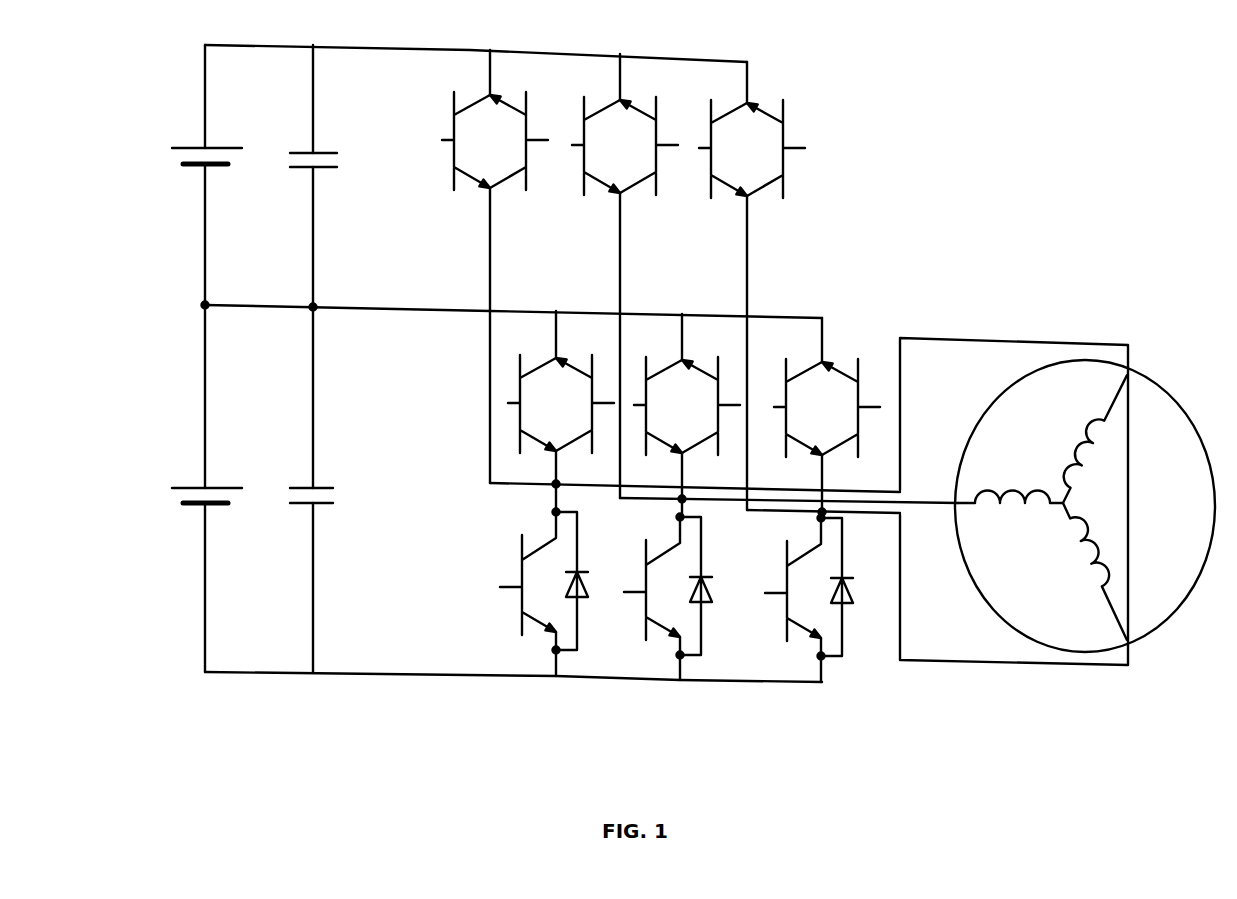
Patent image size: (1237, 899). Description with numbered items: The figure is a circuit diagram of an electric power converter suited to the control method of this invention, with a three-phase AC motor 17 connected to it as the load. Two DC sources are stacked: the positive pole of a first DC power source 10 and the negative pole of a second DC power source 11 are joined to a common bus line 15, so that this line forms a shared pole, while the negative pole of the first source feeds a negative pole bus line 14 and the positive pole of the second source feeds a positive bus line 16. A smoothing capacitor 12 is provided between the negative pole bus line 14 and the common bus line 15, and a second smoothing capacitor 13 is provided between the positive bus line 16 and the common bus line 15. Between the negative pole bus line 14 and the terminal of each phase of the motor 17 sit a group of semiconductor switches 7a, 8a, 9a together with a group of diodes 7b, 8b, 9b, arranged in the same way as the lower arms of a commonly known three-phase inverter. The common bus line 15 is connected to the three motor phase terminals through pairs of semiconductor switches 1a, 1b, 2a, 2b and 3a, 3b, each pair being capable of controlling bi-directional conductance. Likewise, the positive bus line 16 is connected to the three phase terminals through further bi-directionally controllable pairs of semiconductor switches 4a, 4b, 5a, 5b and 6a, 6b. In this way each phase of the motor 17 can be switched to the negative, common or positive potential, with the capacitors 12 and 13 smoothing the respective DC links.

The semiconductor switch 1a is at (520, 345).
The semiconductor switch 1b is at (598, 356).
The semiconductor switch 2a is at (645, 352).
The semiconductor switch 2b is at (725, 364).
The semiconductor switch 3a is at (782, 362).
The semiconductor switch 3b is at (858, 370).
The semiconductor switch 4a is at (449, 90).
The semiconductor switch 4b is at (530, 92).
The semiconductor switch 5a is at (578, 96).
The semiconductor switch 5b is at (660, 98).
The semiconductor switch 6a is at (700, 104).
The semiconductor switch 6b is at (782, 112).
The semiconductor switch 7a is at (512, 613).
The diode 7b is at (583, 645).
The semiconductor switch 8a is at (645, 645).
The diode 8b is at (715, 653).
The semiconductor switch 9a is at (782, 640).
The diode 9b is at (857, 652).
The first DC power source 10 is at (220, 510).
The second DC power source 11 is at (217, 172).
The smoothing capacitor 12 is at (298, 510).
The smoothing capacitor 13 is at (297, 176).
The negative pole bus line 14 is at (457, 668).
The common bus line 15 is at (433, 308).
The positive bus line 16 is at (398, 50).
The three-phase AC motor 17 is at (1160, 390).